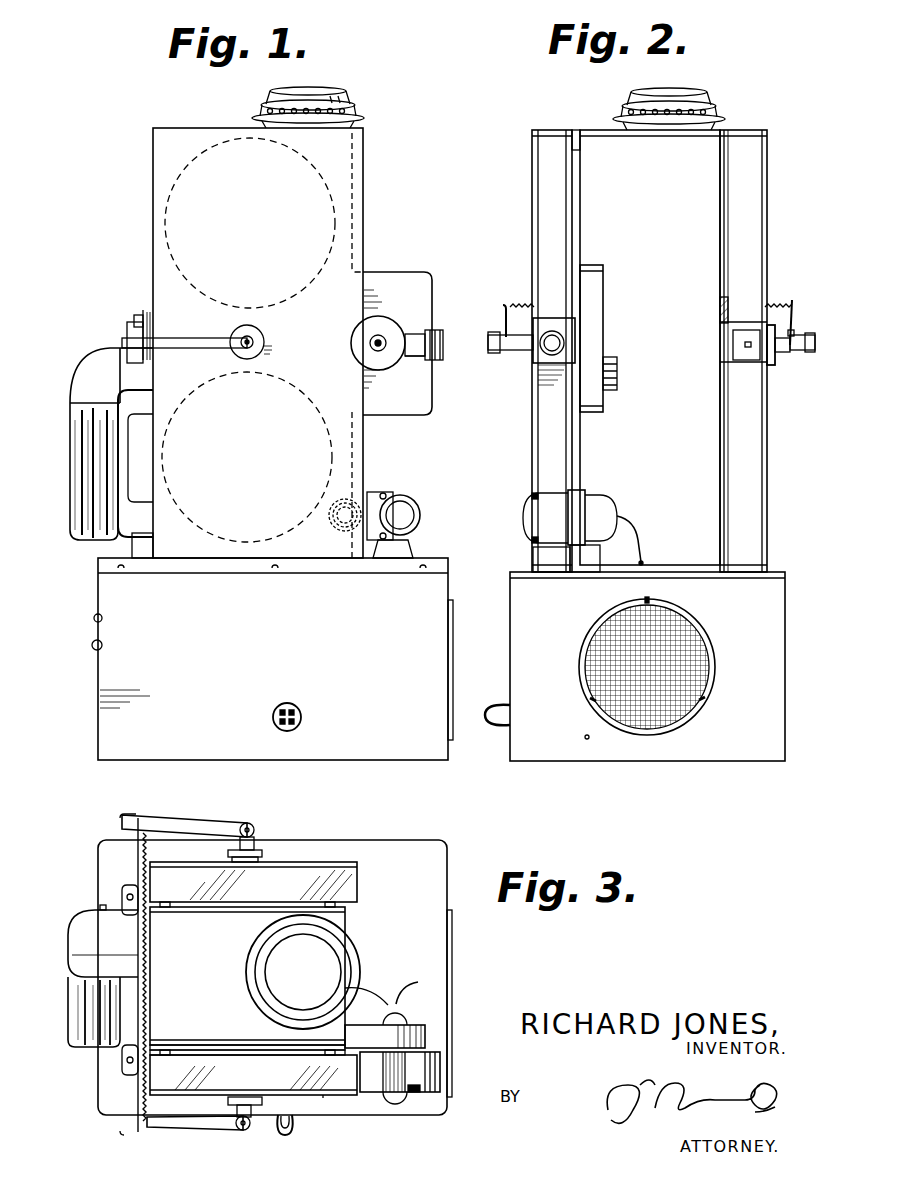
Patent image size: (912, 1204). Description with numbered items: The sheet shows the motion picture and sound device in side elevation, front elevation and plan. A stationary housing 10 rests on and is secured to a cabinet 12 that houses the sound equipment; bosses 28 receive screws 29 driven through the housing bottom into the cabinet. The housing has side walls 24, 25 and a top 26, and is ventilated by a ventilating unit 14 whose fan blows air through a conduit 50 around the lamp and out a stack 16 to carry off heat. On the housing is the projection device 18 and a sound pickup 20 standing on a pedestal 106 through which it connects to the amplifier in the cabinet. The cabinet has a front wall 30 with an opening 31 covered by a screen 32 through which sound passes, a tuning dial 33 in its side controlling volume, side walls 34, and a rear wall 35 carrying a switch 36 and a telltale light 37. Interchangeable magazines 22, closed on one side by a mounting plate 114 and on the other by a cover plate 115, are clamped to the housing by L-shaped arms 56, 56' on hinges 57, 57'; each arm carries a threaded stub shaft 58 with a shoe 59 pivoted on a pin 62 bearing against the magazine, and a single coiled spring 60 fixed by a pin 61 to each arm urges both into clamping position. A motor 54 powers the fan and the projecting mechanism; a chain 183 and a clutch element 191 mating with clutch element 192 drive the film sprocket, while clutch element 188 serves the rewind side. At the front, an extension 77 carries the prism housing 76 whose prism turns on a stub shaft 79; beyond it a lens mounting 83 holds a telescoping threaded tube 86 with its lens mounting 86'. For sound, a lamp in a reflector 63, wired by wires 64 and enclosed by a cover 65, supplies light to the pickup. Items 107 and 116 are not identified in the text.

In FIG. 1, the stationary housing 10 is at (360, 170).
In FIG. 2, the stationary housing 10 is at (594, 126).
In FIG. 3, the stationary housing 10 is at (349, 916).
In FIG. 1, the cabinet 12 is at (96, 760).
In FIG. 2, the cabinet 12 is at (748, 764).
In FIG. 3, the cabinet 12 is at (451, 852).
In FIG. 1, the ventilating unit 14 is at (80, 538).
In FIG. 3, the ventilating unit 14 is at (82, 1040).
In FIG. 1, the stack 16 is at (347, 108).
In FIG. 2, the stack 16 is at (694, 92).
In FIG. 3, the stack 16 is at (360, 950).
In FIG. 1, the projection device 18 is at (418, 322).
In FIG. 2, the projection device 18 is at (530, 366).
In FIG. 1, the sound pickup 20 is at (404, 495).
In FIG. 2, the sound pickup 20 is at (597, 491).
In FIG. 3, the sound pickup 20 is at (442, 1071).
In FIG. 1, the magazine 22 is at (366, 215).
In FIG. 2, the magazine 22 is at (531, 216).
In FIG. 3, the magazine 22 is at (324, 1100).
In FIG. 2, the side wall 24 is at (578, 172).
In FIG. 3, the side wall 24 is at (230, 1045).
In FIG. 2, the side wall 25 is at (724, 166).
In FIG. 3, the side wall 25 is at (222, 905).
In FIG. 3, the top 26 is at (195, 976).
In FIG. 1, the bosses 28 is at (160, 566).
In FIG. 1, the screws 29 is at (142, 548).
In FIG. 1, the front wall 30 is at (449, 586).
In FIG. 2, the front wall 30 is at (621, 763).
In FIG. 1, the opening 31 is at (453, 650).
In FIG. 2, the opening 31 is at (714, 685).
In FIG. 3, the opening 31 is at (453, 956).
In FIG. 2, the screen 32 is at (612, 708).
In FIG. 1, the tuning dial 33 is at (293, 706).
In FIG. 2, the tuning dial 33 is at (490, 722).
In FIG. 3, the tuning dial 33 is at (292, 1130).
In FIG. 1, the side walls 34 is at (265, 654).
In FIG. 2, the side walls 34 is at (510, 674).
In FIG. 1, the rear wall 35 is at (98, 708).
In FIG. 1, the switch 36 is at (94, 618).
In FIG. 1, the telltale light 37 is at (92, 645).
In FIG. 1, the conduit 50 is at (102, 366).
In FIG. 3, the conduit 50 is at (130, 952).
In FIG. 1, the motor 54 is at (142, 455).
In FIG. 1, the L-shaped arm 56 is at (184, 329).
In FIG. 3, the L-shaped arm 56 is at (195, 1138).
In FIG. 3, the L-shaped arm 56' is at (184, 811).
In FIG. 1, the hinge 57 is at (116, 330).
In FIG. 2, the hinge 57 is at (518, 320).
In FIG. 3, the hinge 57' is at (98, 979).
In FIG. 2, the threaded stub shaft 58 is at (780, 358).
In FIG. 3, the threaded stub shaft 58 is at (251, 823).
In FIG. 1, the shoe 59 is at (255, 340).
In FIG. 2, the shoe 59 is at (771, 367).
In FIG. 3, the shoe 59 is at (258, 859).
In FIG. 1, the coiled spring 60 is at (146, 316).
In FIG. 2, the coiled spring 60 is at (777, 304).
In FIG. 3, the coiled spring 60 is at (140, 846).
In FIG. 1, the pin 61 is at (150, 328).
In FIG. 2, the pin 61 is at (795, 310).
In FIG. 3, the pin 61 is at (146, 834).
In FIG. 2, the pin 62 is at (795, 336).
In FIG. 3, the pin 62 is at (254, 850).
In FIG. 2, the reflector 63 is at (613, 500).
In FIG. 2, the wires 64 is at (636, 537).
In FIG. 3, the wires 64 is at (396, 1002).
In FIG. 1, the cover 65 is at (416, 511).
In FIG. 2, the cover 65 is at (528, 500).
In FIG. 1, the prism housing 76 is at (366, 334).
In FIG. 1, the extension 77 is at (407, 272).
In FIG. 2, the extension 77 is at (605, 263).
In FIG. 3, the extension 77 is at (431, 1036).
In FIG. 1, the stub shaft 79 is at (370, 344).
In FIG. 1, the lens mounting 83 is at (413, 360).
In FIG. 1, the telescoping threaded tube 86 is at (345, 515).
In FIG. 1, the lens mounting 86' is at (445, 339).
In FIG. 1, the pedestal 106 is at (402, 541).
In FIG. 2, the pedestal 106 is at (533, 556).
In FIG. 1, the base joint 107 is at (378, 563).
In FIG. 3, the plate 114 is at (283, 1052).
In FIG. 3, the plate 115 is at (326, 1098).
In FIG. 1, the dashed disc 116 is at (168, 198).
In FIG. 2, the chain 183 is at (619, 378).
In FIG. 2, the clutch element 188 is at (720, 312).
In FIG. 2, the clutch element 191 is at (604, 394).
In FIG. 2, the clutch element 192 is at (561, 374).